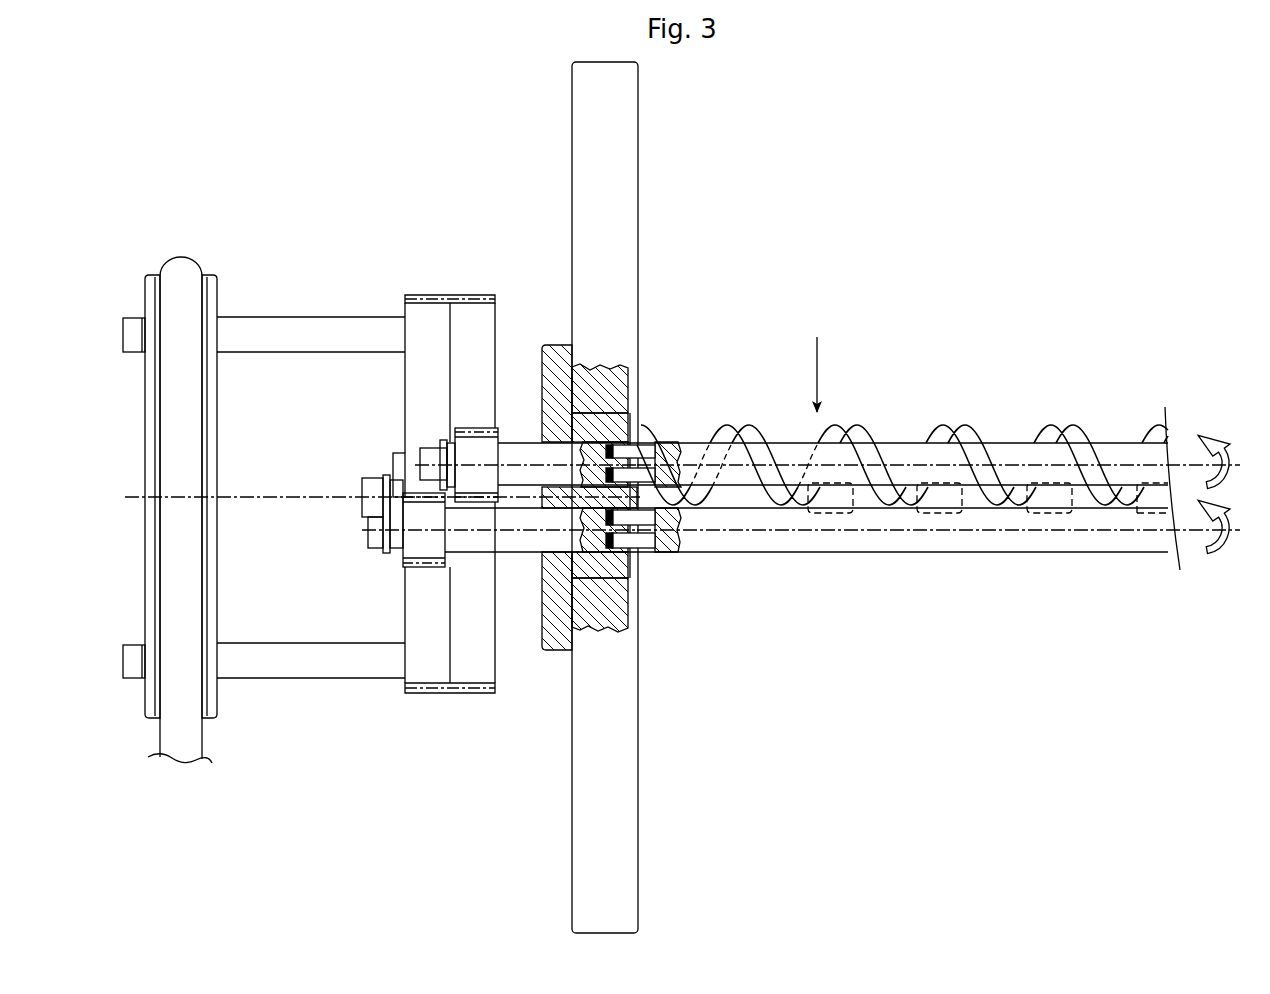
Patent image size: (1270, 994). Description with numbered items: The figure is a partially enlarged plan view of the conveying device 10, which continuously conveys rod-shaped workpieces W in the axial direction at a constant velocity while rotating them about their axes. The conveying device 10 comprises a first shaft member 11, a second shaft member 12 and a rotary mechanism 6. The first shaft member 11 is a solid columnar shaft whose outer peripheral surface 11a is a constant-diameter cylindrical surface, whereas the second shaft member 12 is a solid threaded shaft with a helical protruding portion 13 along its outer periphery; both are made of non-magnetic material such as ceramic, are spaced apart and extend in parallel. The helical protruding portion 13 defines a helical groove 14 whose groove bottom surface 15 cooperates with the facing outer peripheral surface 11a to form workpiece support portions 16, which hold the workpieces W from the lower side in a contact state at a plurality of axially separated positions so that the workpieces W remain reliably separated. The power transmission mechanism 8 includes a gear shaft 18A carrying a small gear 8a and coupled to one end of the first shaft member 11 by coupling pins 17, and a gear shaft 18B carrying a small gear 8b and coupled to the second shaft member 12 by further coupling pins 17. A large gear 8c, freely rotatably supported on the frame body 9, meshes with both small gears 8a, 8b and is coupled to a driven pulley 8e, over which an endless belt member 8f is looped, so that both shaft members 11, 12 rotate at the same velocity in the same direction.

The rotary mechanism 6 is at (405, 215).
The power transmission mechanism 8 is at (239, 298).
The small gear 8a is at (418, 563).
The small gear 8b is at (458, 428).
The large gear 8c is at (438, 295).
The driven pulley 8e is at (148, 434).
The endless belt member 8f is at (182, 268).
The frame body 9 is at (641, 120).
The conveying device 10 is at (938, 456).
The first shaft member 11 is at (771, 563).
The outer peripheral surface 11a is at (820, 540).
The second shaft member 12 is at (902, 426).
The helical protruding portion 13 is at (962, 424).
The helical groove 14 is at (887, 434).
The groove bottom surface 15 is at (912, 455).
The workpiece support portion 16 is at (860, 508).
The coupling pin 17 is at (635, 443).
The gear shaft 18A is at (516, 543).
The gear shaft 18B is at (516, 453).
The rod-shaped workpiece W is at (943, 515).